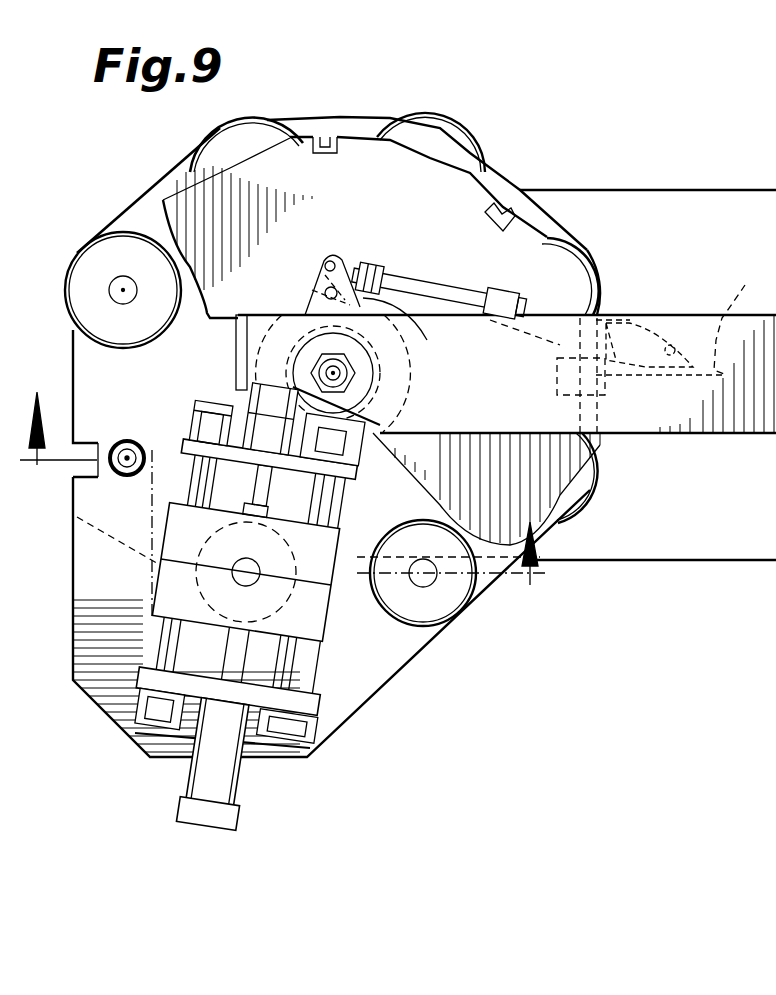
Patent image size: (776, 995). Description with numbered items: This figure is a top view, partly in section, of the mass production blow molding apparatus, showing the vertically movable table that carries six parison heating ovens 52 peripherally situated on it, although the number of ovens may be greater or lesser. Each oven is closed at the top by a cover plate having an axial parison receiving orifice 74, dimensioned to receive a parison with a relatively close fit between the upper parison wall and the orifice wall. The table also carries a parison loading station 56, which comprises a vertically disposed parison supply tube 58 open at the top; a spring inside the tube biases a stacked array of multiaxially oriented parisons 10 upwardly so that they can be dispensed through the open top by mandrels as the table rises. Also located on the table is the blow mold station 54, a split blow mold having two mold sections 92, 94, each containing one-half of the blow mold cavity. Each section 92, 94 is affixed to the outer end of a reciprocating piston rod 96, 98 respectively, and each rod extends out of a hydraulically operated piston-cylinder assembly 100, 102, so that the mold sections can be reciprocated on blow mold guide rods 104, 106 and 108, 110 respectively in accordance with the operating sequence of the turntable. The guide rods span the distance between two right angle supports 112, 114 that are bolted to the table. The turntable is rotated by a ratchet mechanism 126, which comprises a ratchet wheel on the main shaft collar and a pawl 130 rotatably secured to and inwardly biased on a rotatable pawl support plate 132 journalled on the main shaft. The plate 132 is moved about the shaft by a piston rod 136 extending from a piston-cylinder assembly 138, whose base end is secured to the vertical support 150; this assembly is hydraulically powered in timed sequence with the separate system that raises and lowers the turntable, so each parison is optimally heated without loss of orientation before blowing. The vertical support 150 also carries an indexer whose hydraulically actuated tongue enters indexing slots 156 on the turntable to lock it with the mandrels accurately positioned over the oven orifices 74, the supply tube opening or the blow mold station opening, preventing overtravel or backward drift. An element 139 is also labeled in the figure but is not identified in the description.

The parisons 10 is at (396, 506).
The parison heating ovens 52 is at (250, 130).
The blow mold station 54 is at (335, 626).
The parison loading station 56 is at (118, 432).
The parison supply tube 58 is at (120, 477).
The parison receiving orifice 74 is at (123, 290).
The mold section 92 is at (170, 552).
The mold section 94 is at (325, 600).
The reciprocating piston rod 96 is at (240, 490).
The reciprocating piston rod 98 is at (220, 647).
The piston-cylinder assembly 100 is at (248, 395).
The piston-cylinder assembly 102 is at (242, 800).
The blow mold guide rod 104 is at (340, 500).
The blow mold guide rod 106 is at (185, 440).
The blow mold guide rod 108 is at (312, 670).
The blow mold guide rod 110 is at (167, 630).
The right angle support 112 is at (355, 462).
The right angle support 114 is at (325, 735).
The ratchet mechanism 126 is at (278, 312).
The pawl 130 is at (507, 365).
The pawl support plate 132 is at (328, 262).
The piston rod 136 is at (433, 288).
The piston-cylinder assembly 138 is at (594, 294).
The hidden link 139 is at (736, 318).
The vertical support 150 is at (603, 440).
The indexing slots 156 is at (510, 205).